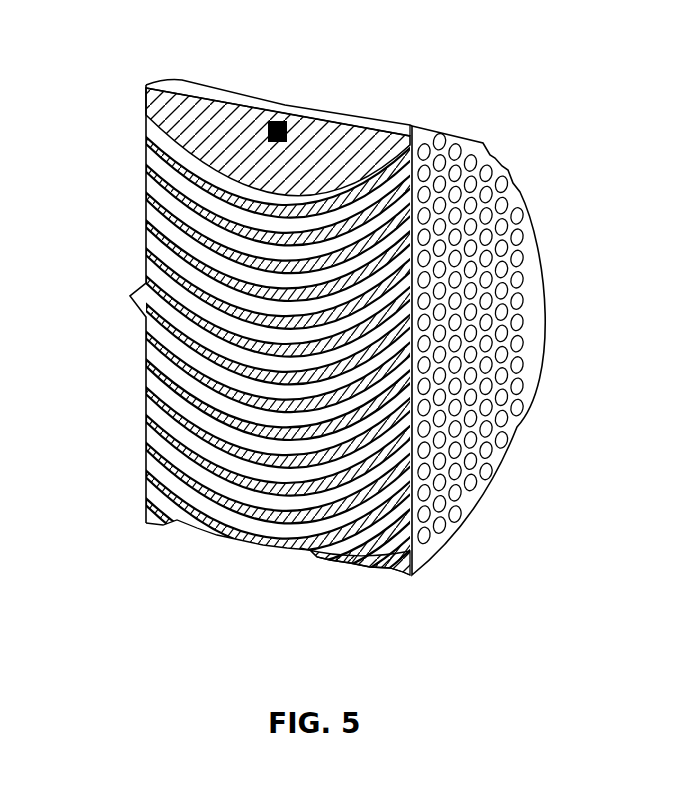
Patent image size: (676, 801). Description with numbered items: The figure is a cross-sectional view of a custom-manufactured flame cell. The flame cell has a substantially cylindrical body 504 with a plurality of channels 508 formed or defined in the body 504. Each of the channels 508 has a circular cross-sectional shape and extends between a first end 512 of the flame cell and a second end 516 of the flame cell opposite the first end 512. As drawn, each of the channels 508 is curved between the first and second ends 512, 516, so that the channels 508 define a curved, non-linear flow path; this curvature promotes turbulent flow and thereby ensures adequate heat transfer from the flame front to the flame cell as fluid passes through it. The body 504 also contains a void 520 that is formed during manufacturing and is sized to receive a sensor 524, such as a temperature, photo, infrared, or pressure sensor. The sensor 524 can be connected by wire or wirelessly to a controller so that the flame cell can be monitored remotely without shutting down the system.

The body 504 is at (528, 237).
The channels 508 is at (183, 182).
The first end 512 is at (440, 558).
The second end 516 is at (137, 410).
The void 520 is at (273, 120).
The sensor 524 is at (287, 117).